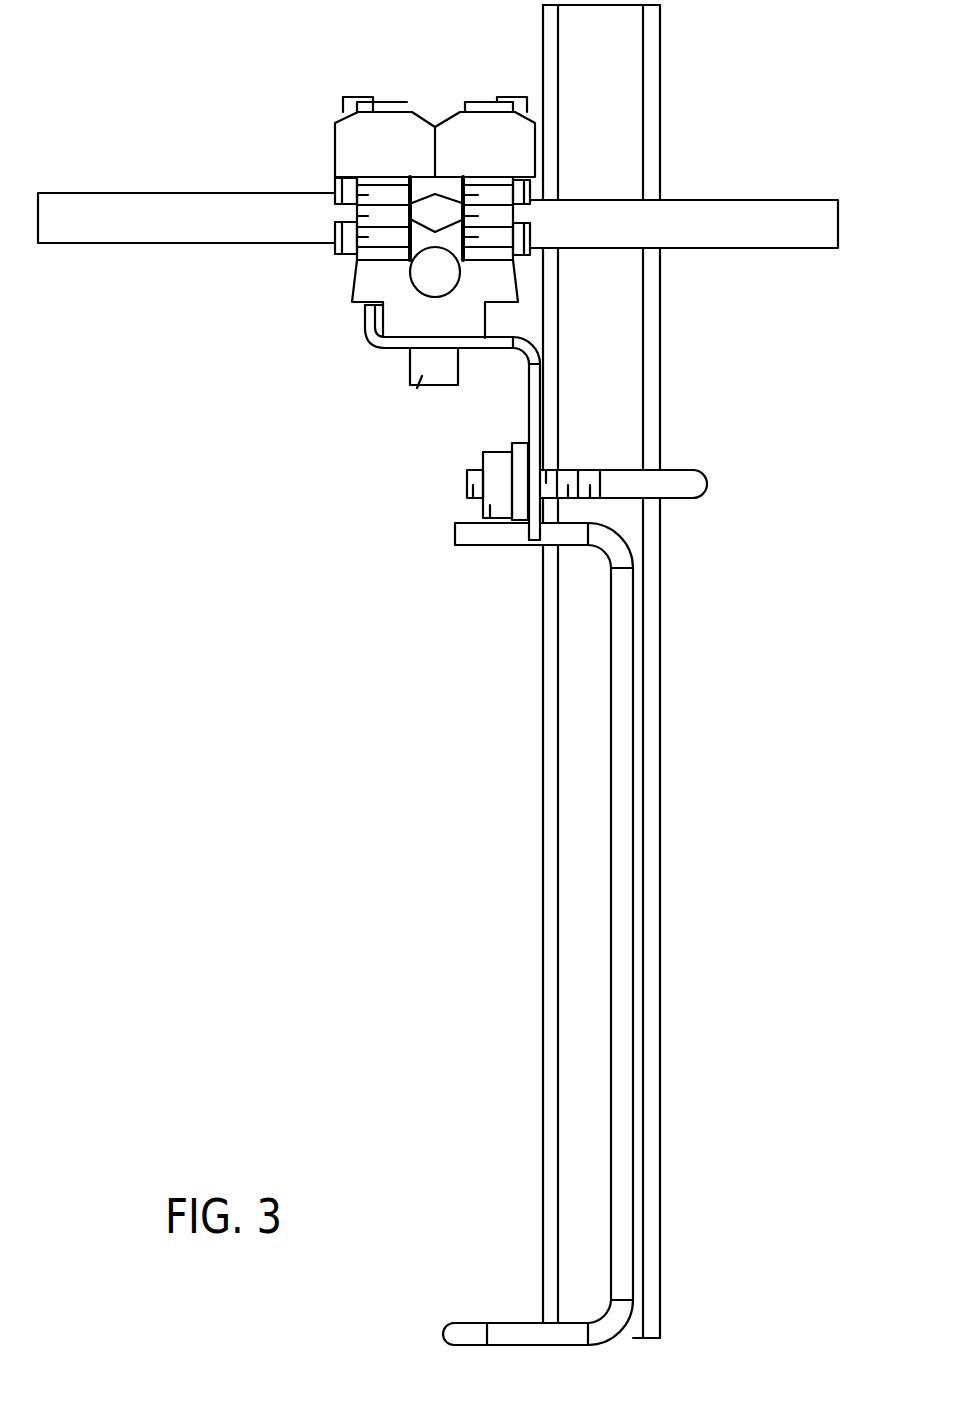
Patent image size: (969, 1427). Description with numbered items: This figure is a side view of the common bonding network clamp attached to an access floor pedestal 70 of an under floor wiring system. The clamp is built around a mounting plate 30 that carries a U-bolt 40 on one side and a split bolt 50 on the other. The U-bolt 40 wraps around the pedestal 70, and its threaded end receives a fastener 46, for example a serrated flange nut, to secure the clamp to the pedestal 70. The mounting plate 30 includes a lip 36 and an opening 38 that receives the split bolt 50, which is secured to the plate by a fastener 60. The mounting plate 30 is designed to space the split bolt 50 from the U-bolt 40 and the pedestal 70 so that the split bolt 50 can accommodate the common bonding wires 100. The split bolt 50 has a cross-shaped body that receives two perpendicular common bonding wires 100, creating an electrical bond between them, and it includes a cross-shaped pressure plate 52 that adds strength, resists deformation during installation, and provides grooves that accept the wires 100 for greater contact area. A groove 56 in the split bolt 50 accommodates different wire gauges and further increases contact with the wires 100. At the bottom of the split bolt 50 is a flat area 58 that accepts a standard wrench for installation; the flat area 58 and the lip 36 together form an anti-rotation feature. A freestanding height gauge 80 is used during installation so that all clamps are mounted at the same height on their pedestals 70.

The mounting plate 30 is at (393, 350).
The lip 36 is at (378, 338).
The opening 38 is at (458, 352).
The U-bolt 40 is at (707, 465).
The fastener 46 is at (470, 511).
The split bolt 50 is at (350, 128).
The pressure plate 52 is at (337, 185).
The groove 56 is at (430, 297).
The flat area 58 is at (488, 317).
The fastener 60 is at (397, 355).
The access floor pedestal 70 is at (660, 773).
The freestanding height gauge 80 is at (625, 998).
The common bonding wires 100 is at (353, 263).